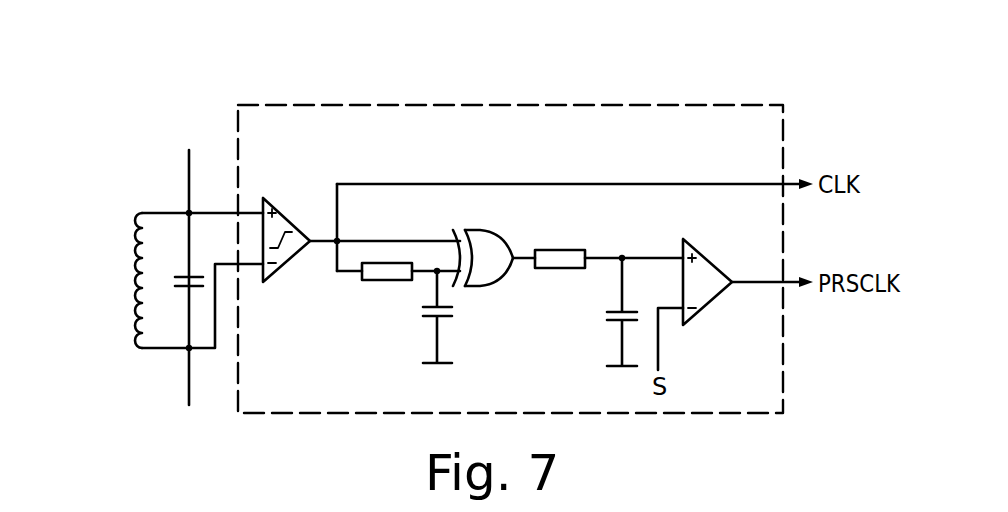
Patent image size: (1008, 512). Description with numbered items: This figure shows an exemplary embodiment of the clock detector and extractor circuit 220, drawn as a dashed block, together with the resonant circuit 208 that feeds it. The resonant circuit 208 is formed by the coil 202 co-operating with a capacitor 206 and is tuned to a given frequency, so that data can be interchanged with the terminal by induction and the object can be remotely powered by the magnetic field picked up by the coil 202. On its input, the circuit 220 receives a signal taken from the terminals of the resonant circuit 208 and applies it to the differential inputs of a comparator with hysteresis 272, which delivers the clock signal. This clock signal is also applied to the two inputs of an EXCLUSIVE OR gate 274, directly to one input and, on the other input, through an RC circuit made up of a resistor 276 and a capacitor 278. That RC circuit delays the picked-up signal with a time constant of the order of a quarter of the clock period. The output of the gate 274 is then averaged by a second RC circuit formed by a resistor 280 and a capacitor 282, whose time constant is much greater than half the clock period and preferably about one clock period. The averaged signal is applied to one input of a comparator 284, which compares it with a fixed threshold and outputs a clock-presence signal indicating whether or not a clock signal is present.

The coil 202 is at (133, 320).
The capacitor 206 is at (180, 275).
The resonant circuit 208 is at (149, 192).
The clock detector and extractor circuit 220 is at (593, 103).
The comparator with hysteresis 272 is at (294, 200).
The EXCLUSIVE OR gate 274 is at (490, 233).
The resistor of RC delay circuit 276 is at (370, 282).
The capacitor of RC delay circuit 278 is at (448, 318).
The resistor of RC averaging circuit 280 is at (582, 250).
The capacitor of RC averaging circuit 282 is at (606, 311).
The comparator 284 is at (707, 257).